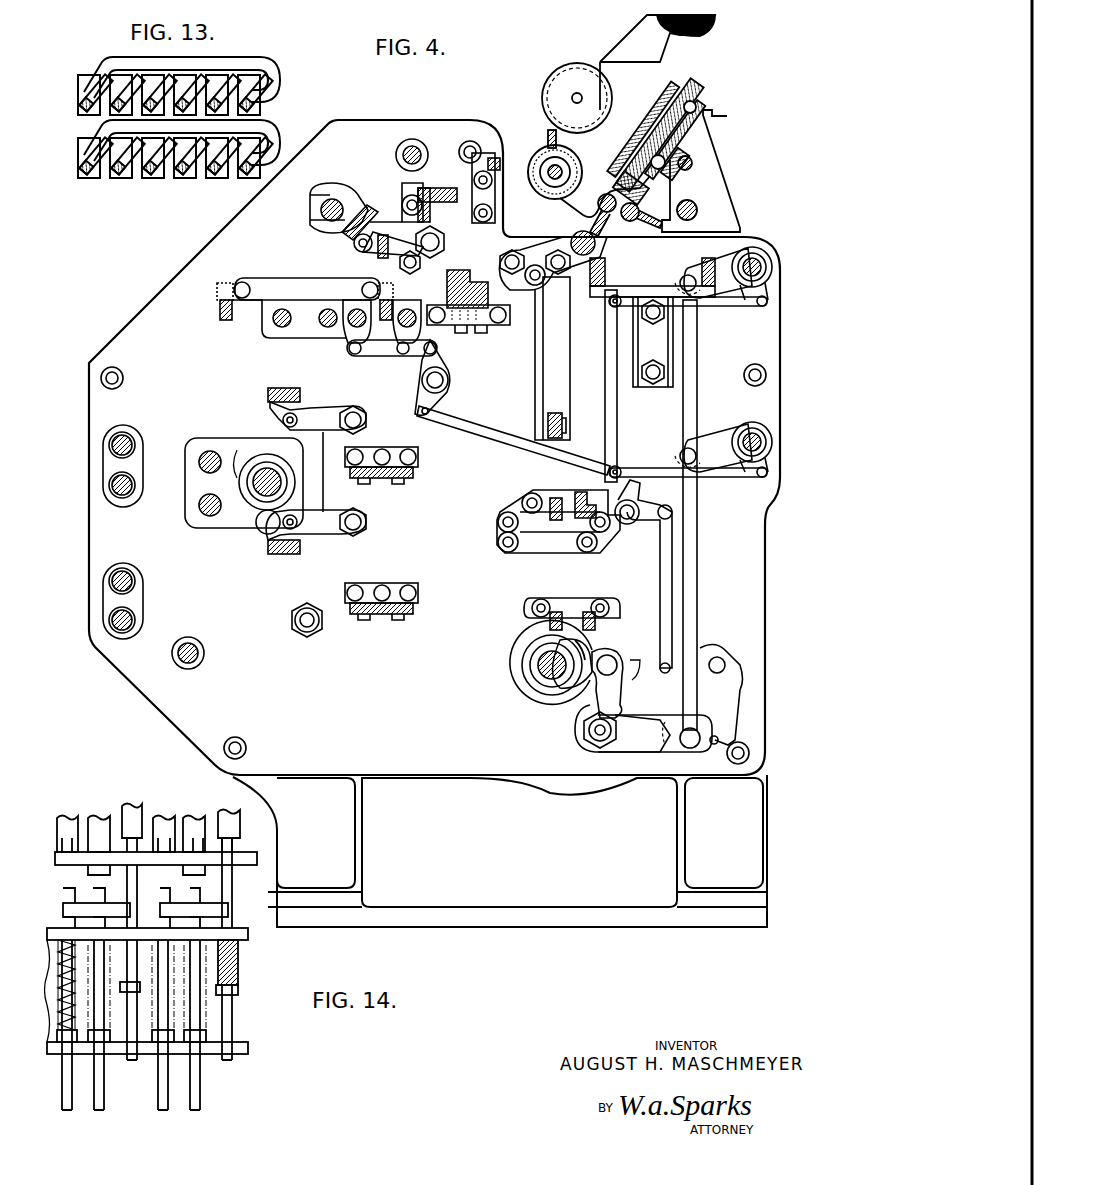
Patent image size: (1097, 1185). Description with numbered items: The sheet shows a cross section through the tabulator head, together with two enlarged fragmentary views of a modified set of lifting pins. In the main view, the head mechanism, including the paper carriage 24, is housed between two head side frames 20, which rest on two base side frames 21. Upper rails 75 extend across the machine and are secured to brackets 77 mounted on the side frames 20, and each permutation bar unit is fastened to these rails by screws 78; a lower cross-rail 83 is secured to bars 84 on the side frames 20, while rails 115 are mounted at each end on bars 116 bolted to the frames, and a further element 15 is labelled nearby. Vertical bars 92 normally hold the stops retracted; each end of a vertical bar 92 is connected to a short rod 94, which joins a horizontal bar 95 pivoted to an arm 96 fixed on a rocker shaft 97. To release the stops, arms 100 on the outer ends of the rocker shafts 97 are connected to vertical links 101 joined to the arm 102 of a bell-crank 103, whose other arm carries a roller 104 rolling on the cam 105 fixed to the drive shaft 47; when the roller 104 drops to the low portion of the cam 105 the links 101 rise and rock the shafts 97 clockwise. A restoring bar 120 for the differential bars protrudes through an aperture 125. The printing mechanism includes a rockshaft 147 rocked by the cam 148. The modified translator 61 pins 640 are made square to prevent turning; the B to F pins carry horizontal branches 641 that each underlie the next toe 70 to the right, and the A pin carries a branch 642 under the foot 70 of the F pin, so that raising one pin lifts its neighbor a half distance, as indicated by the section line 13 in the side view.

In FIG. 4, the head side frame 20 is at (160, 697).
In FIG. 4, the base side frame 21 is at (506, 916).
In FIG. 4, the paper carriage 24 is at (700, 86).
In FIG. 4, the rockshaft 147 is at (326, 200).
In FIG. 4, the cam 148 is at (377, 202).
In FIG. 4, the upper rail 75 is at (605, 272).
In FIG. 4, the bracket 77 is at (651, 305).
In FIG. 4, the screw 78 is at (702, 270).
In FIG. 4, the rocker shaft 97 is at (772, 267).
In FIG. 4, the short rod 94 is at (611, 306).
In FIG. 4, the arm 100 is at (727, 292).
In FIG. 4, the horizontal bar 95 is at (742, 306).
In FIG. 4, the arm 96 is at (768, 296).
In FIG. 4, the aperture 125 is at (545, 383).
In FIG. 4, the vertical bar 92 is at (606, 393).
In FIG. 4, the vertical link 101 is at (690, 416).
In FIG. 4, the restoring bar 120 is at (553, 442).
In FIG. 4, the bar 84 is at (533, 542).
In FIG. 4, the lower cross-rail 83 is at (578, 542).
In FIG. 4, the bar 116 is at (577, 608).
In FIG. 4, the stop block 15 is at (550, 623).
In FIG. 4, the rail 115 is at (595, 623).
In FIG. 4, the drive shaft 47 is at (540, 670).
In FIG. 4, the roller 104 is at (632, 668).
In FIG. 4, the cam 105 is at (580, 673).
In FIG. 4, the bell-crank 103 is at (600, 693).
In FIG. 4, the arm 102 is at (655, 745).
In FIG. 13, the pin 640 is at (88, 99).
In FIG. 14, the pin 640 is at (196, 1025).
In FIG. 13, the branch 642 is at (92, 142).
In FIG. 14, the branch 642 is at (68, 856).
In FIG. 13, the toe 70 is at (140, 175).
In FIG. 14, the toe 70 is at (210, 806).
In FIG. 13, the branch 641 is at (188, 172).
In FIG. 14, the branch 641 is at (178, 868).
In FIG. 14, the section line 13 is at (37, 922).
In FIG. 14, the translator 61 is at (248, 932).